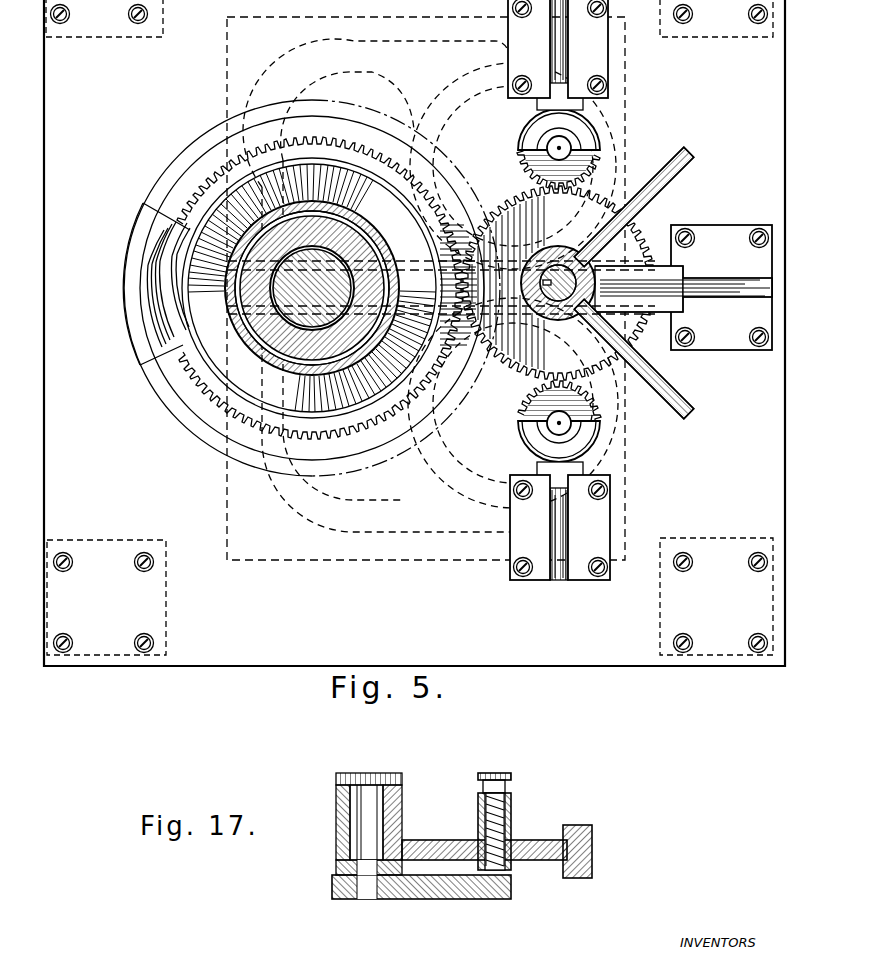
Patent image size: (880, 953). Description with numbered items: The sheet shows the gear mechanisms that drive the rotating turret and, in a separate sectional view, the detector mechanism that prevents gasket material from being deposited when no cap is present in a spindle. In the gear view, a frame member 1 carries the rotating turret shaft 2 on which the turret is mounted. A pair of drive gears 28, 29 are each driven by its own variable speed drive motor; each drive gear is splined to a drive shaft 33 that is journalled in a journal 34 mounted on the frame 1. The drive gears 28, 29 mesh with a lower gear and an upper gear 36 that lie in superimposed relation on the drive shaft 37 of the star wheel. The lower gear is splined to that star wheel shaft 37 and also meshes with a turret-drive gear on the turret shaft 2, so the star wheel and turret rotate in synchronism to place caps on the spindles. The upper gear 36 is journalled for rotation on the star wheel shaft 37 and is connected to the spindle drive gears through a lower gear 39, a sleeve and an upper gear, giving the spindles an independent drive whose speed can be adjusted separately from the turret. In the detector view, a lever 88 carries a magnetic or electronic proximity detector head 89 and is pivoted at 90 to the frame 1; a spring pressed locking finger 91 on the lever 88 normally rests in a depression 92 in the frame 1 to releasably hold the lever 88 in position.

In FIG. 5, the frame member 1 is at (232, 655).
In FIG. 17, the frame member 1 is at (410, 887).
In FIG. 5, the rotating turret shaft 2 is at (330, 205).
In FIG. 5, the drive gear 28 is at (530, 172).
In FIG. 5, the drive gear 29 is at (530, 405).
In FIG. 5, the drive shaft 33 is at (552, 146).
In FIG. 5, the journal 34 is at (590, 135).
In FIG. 5, the upper gear 36 is at (645, 245).
In FIG. 5, the drive shaft of the star wheel 37 is at (558, 262).
In FIG. 5, the lower gear 39 is at (223, 408).
In FIG. 17, the lever 88 is at (540, 829).
In FIG. 17, the proximity detector head 89 is at (580, 848).
In FIG. 17, the pivot 90 is at (360, 797).
In FIG. 17, the spring pressed locking finger 91 is at (500, 864).
In FIG. 17, the depression 92 is at (494, 880).